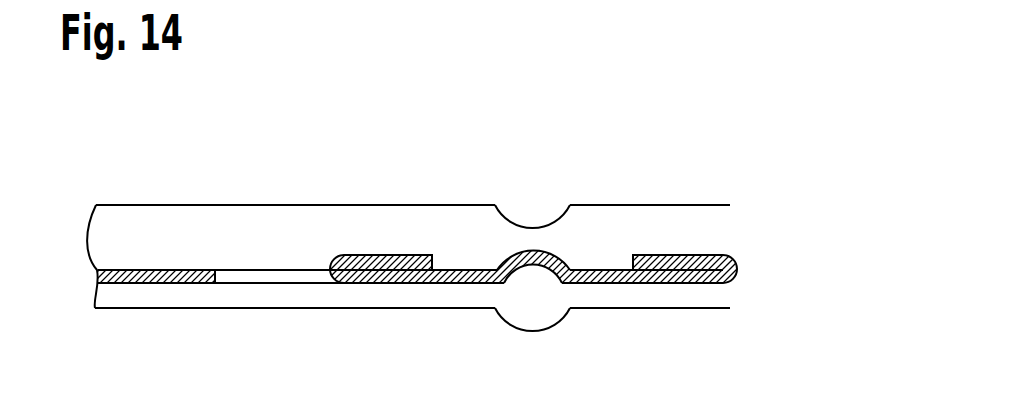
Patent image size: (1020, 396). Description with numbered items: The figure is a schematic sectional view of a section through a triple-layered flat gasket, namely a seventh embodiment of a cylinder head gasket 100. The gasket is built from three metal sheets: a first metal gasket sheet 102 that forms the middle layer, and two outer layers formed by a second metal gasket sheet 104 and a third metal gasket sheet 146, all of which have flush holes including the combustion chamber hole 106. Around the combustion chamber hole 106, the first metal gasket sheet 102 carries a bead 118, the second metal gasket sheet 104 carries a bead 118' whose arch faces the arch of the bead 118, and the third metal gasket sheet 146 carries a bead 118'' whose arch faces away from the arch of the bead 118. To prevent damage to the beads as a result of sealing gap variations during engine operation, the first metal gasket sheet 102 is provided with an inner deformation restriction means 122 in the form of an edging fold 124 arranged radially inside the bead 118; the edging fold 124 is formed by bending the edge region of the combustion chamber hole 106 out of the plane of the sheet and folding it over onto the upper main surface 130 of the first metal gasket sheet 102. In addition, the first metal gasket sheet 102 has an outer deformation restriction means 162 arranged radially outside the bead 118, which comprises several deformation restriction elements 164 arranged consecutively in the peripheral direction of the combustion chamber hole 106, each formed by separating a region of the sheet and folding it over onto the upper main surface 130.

The cylinder head gasket 100 is at (88, 167).
The first metal gasket sheet 102 is at (137, 283).
The second metal gasket sheet 104 is at (192, 205).
The combustion chamber hole 106 is at (808, 223).
The bead 118 is at (558, 202).
The bead 118' is at (532, 174).
The bead 118'' is at (529, 352).
The deformation restriction means 122 is at (683, 245).
The edging fold 124 is at (696, 256).
The upper main surface 130 is at (452, 270).
The third metal gasket sheet 146 is at (195, 308).
The outer deformation restriction means 162 is at (365, 295).
The deformation restriction element 164 is at (408, 266).